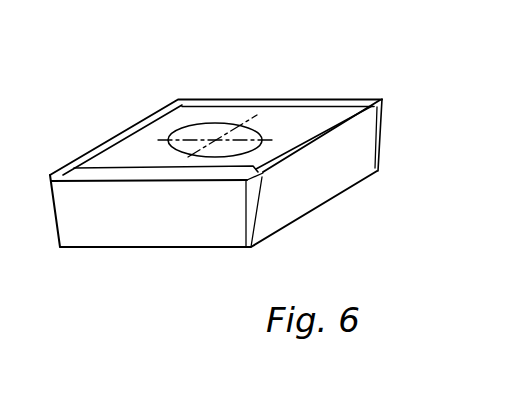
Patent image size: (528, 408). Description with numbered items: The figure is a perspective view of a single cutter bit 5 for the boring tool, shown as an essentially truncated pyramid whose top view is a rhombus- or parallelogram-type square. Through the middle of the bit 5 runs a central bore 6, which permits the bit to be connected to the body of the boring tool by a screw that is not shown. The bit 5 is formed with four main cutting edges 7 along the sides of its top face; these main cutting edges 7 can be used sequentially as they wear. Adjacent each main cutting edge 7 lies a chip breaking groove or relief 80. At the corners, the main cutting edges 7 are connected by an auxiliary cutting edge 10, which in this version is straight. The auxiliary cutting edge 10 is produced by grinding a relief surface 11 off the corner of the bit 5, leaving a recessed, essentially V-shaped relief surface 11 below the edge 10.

The cutter bit 5 is at (342, 172).
The central bore 6 is at (211, 133).
The main cutting edge 7 is at (491, 145).
The auxiliary cutting edge 10 is at (383, 100).
The relief surface 11 is at (250, 208).
The chip breaking groove 80 is at (326, 100).